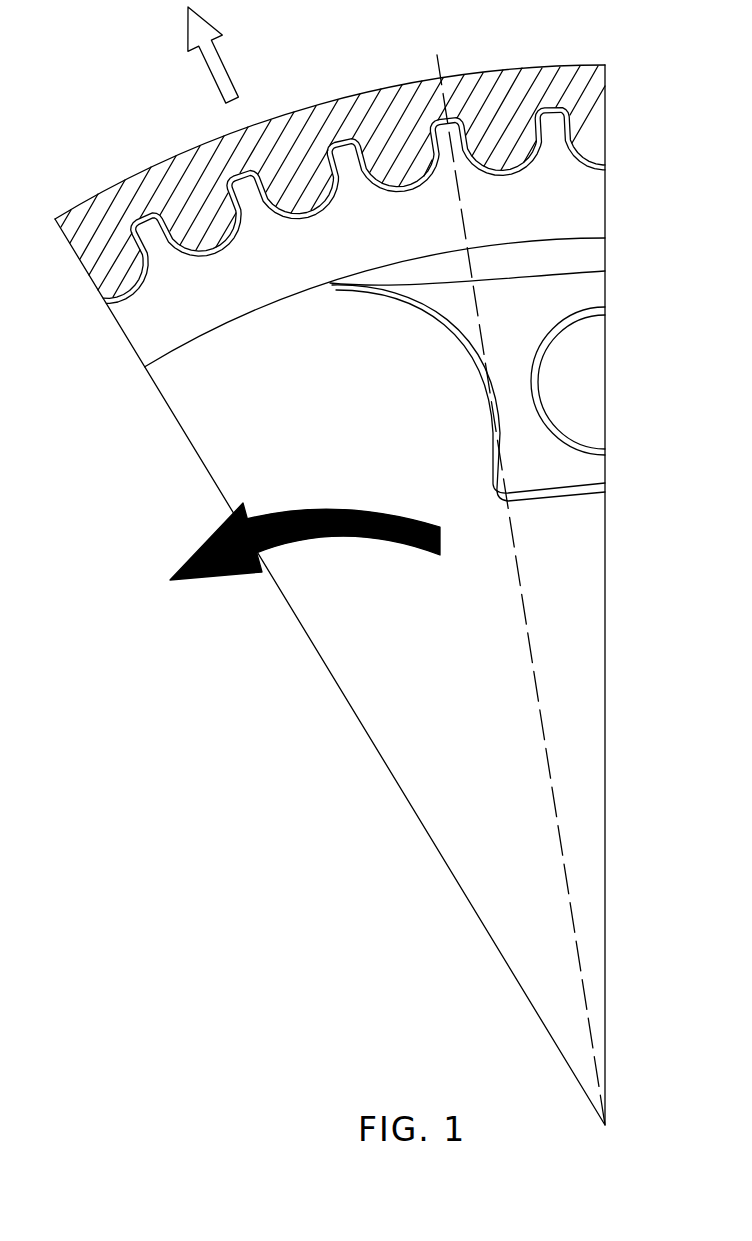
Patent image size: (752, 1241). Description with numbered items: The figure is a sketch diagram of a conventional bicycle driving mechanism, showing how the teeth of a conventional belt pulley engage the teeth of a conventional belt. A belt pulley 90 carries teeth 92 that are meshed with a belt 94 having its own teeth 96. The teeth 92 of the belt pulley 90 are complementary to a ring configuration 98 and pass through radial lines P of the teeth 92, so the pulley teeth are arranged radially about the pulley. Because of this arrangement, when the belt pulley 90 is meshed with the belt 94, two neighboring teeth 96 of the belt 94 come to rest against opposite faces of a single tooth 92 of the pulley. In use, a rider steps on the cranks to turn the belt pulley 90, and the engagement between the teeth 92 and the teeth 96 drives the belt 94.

The belt pulley 90 is at (168, 312).
The teeth 92 is at (252, 210).
The belt 94 is at (203, 160).
The teeth 96 is at (395, 135).
The ring configuration 98 is at (573, 200).
The radial lines P is at (516, 571).